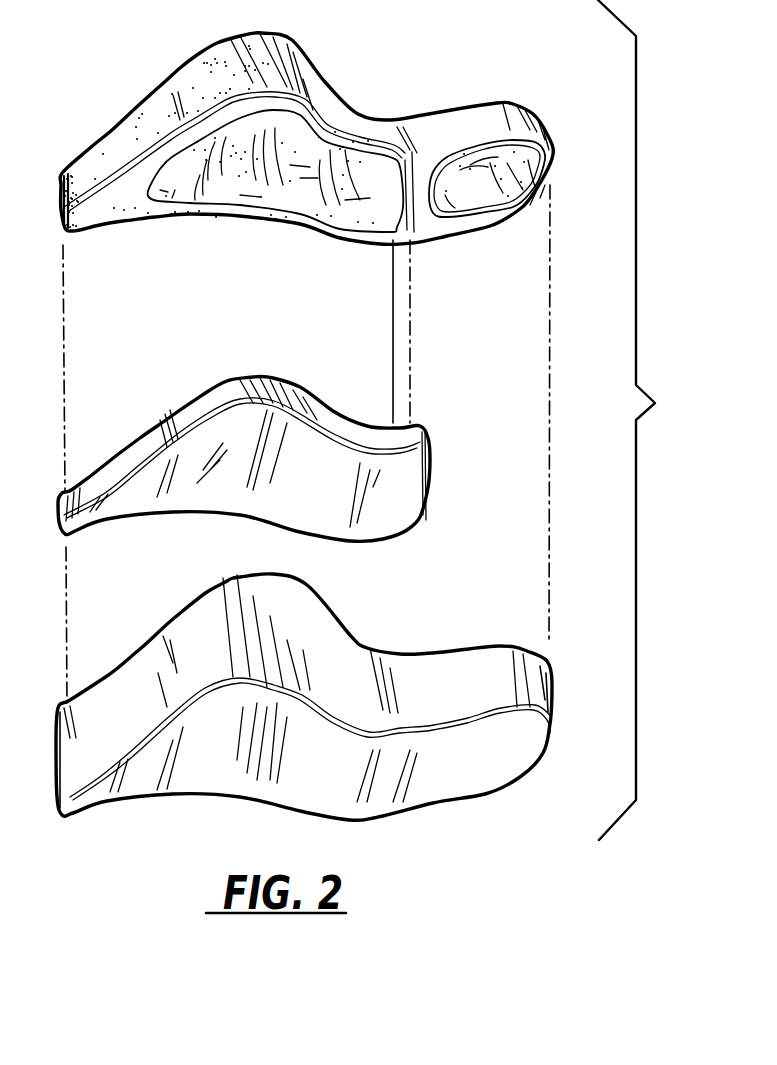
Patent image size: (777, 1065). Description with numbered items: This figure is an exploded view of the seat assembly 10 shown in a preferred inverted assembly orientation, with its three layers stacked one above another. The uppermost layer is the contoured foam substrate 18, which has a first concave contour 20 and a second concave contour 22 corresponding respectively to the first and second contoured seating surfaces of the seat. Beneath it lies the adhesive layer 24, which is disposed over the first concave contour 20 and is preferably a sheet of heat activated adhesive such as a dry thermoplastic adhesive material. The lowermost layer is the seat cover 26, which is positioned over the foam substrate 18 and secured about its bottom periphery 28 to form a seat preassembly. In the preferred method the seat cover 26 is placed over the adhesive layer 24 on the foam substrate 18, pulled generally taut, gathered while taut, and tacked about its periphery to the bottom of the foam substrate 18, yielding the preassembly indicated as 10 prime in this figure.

The seat assembly 10 is at (700, 420).
The contoured foam substrate 18 is at (472, 117).
The first concave contour 20 is at (215, 168).
The second concave contour 22 is at (482, 180).
The adhesive layer 24 is at (400, 492).
The seat cover 26 is at (468, 780).
The bottom periphery 28 is at (178, 63).